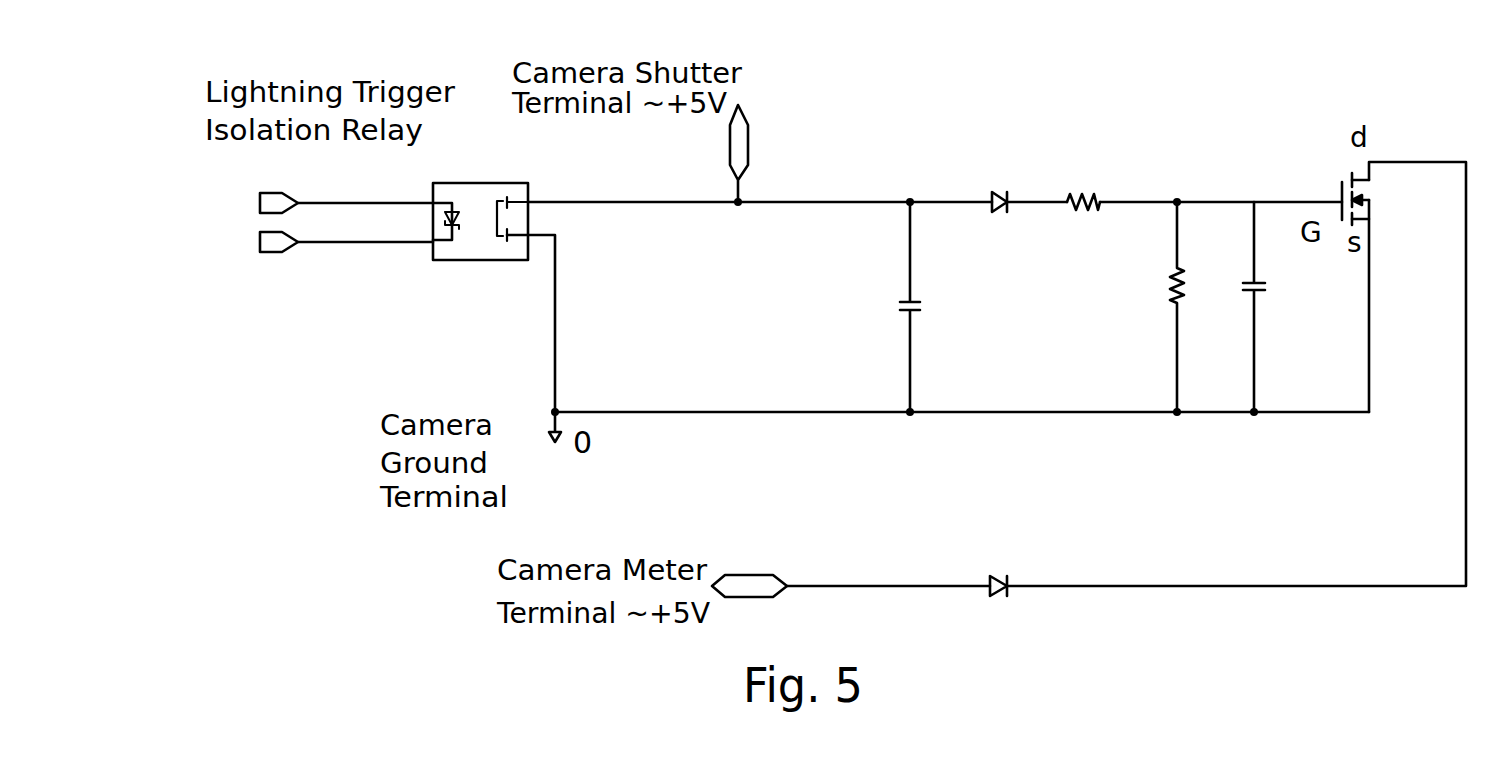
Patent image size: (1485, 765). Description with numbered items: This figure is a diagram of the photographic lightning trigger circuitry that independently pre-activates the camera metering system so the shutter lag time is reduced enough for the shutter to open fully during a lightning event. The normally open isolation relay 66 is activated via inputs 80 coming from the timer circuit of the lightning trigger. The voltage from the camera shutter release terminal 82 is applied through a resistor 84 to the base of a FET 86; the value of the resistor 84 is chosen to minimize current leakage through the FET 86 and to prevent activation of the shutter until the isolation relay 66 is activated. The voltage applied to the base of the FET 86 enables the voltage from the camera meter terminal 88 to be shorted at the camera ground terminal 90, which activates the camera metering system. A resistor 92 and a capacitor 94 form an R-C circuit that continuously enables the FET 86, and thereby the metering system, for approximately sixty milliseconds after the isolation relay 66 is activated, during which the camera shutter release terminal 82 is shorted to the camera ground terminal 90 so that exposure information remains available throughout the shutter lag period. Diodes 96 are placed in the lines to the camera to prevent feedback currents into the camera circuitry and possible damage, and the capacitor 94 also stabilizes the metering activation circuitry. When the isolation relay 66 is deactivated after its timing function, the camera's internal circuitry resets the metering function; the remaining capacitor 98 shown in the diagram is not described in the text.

The isolation relay 66 is at (482, 182).
The inputs 80 is at (253, 242).
The camera shutter release terminal 82 is at (748, 118).
The resistor 84 is at (1065, 190).
The FET 86 is at (1337, 182).
The camera meter terminal 88 is at (752, 573).
The camera ground terminal 90 is at (552, 410).
The resistor 92 is at (1158, 292).
The capacitor 94 is at (1243, 305).
The diodes 96 is at (988, 197).
The capacitor 98 is at (897, 300).